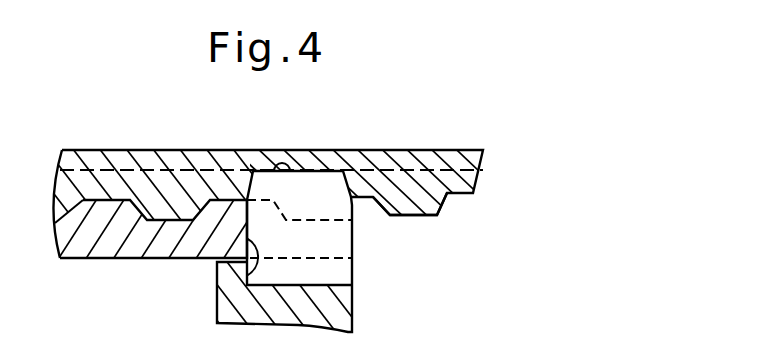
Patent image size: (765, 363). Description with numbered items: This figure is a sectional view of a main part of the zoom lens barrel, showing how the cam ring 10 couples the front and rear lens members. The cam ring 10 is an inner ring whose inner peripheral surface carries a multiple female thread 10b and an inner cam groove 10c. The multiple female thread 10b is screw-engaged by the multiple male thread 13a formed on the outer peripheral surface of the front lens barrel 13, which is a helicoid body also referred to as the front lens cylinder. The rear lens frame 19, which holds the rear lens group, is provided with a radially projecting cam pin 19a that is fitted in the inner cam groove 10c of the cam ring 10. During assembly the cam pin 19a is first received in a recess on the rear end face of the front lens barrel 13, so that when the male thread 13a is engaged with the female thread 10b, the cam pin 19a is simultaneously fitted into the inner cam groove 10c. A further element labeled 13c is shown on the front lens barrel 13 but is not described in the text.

The cam ring 10 is at (417, 153).
The multiple female thread 10b is at (421, 216).
The inner cam groove 10c is at (275, 165).
The front lens barrel 13 is at (98, 259).
The multiple male thread 13a is at (107, 200).
The O-ring 13c is at (247, 264).
The rear lens frame 19 is at (346, 320).
The cam pin 19a is at (347, 244).